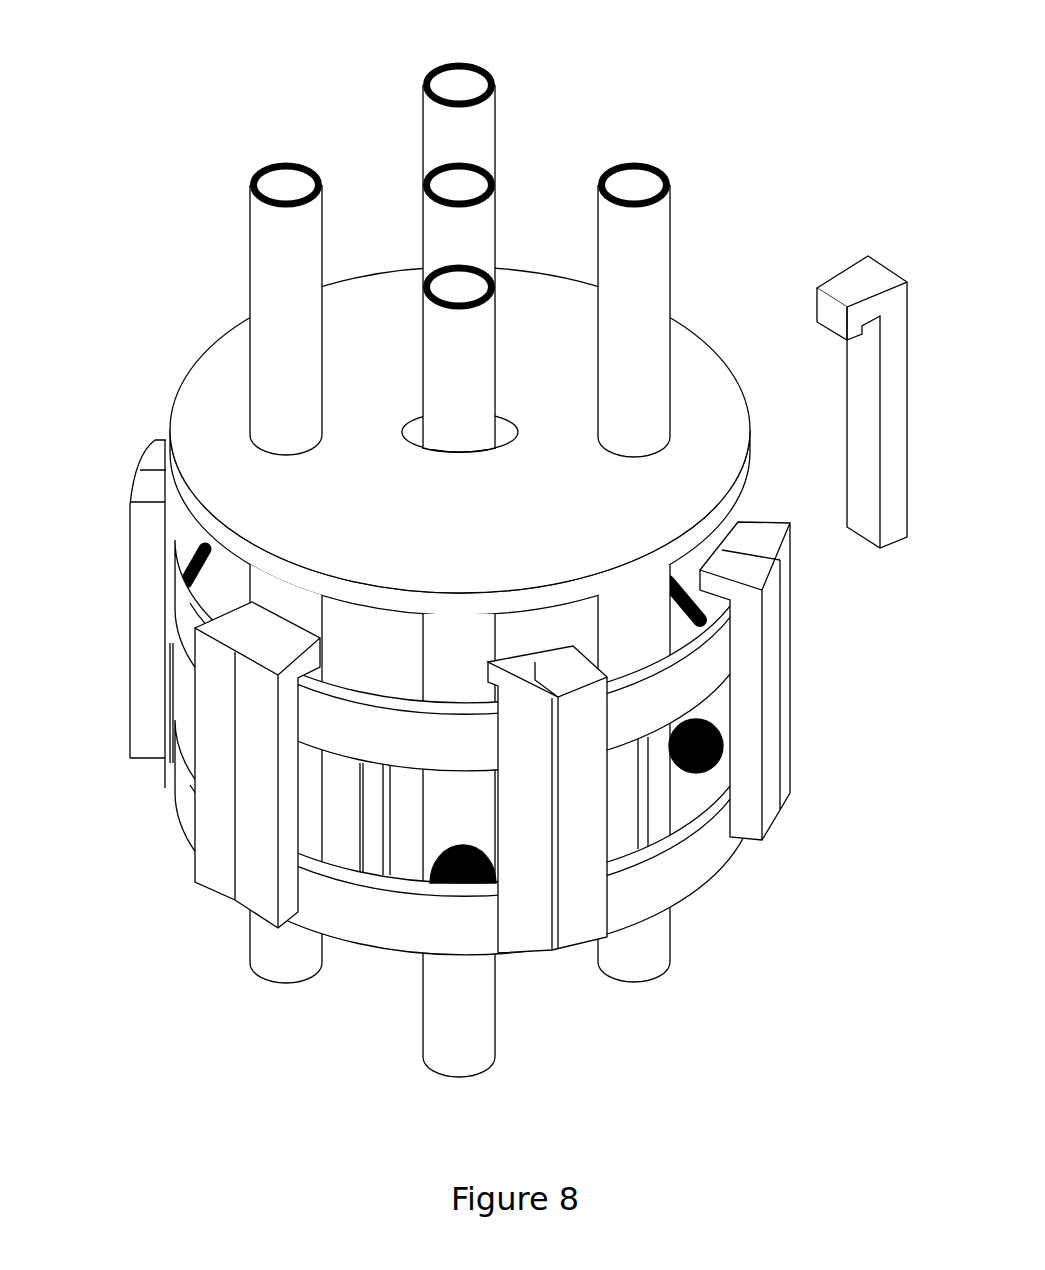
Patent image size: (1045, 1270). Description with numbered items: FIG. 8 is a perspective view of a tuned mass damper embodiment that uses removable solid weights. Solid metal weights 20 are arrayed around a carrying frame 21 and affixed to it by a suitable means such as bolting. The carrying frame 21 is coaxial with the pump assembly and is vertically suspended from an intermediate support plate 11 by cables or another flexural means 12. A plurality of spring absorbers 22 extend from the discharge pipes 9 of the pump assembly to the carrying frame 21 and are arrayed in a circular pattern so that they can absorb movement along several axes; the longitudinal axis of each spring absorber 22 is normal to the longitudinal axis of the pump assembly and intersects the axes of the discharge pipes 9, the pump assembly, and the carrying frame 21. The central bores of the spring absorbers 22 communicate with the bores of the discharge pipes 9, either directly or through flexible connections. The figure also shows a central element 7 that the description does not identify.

The central rod 7 is at (454, 251).
The discharge pipe 9 is at (670, 196).
The intermediate support plate 11 is at (322, 523).
The flexural means 12 is at (178, 540).
The solid metal weight 20 is at (843, 357).
The carrying frame 21 is at (377, 948).
The spring absorber 22 is at (687, 777).